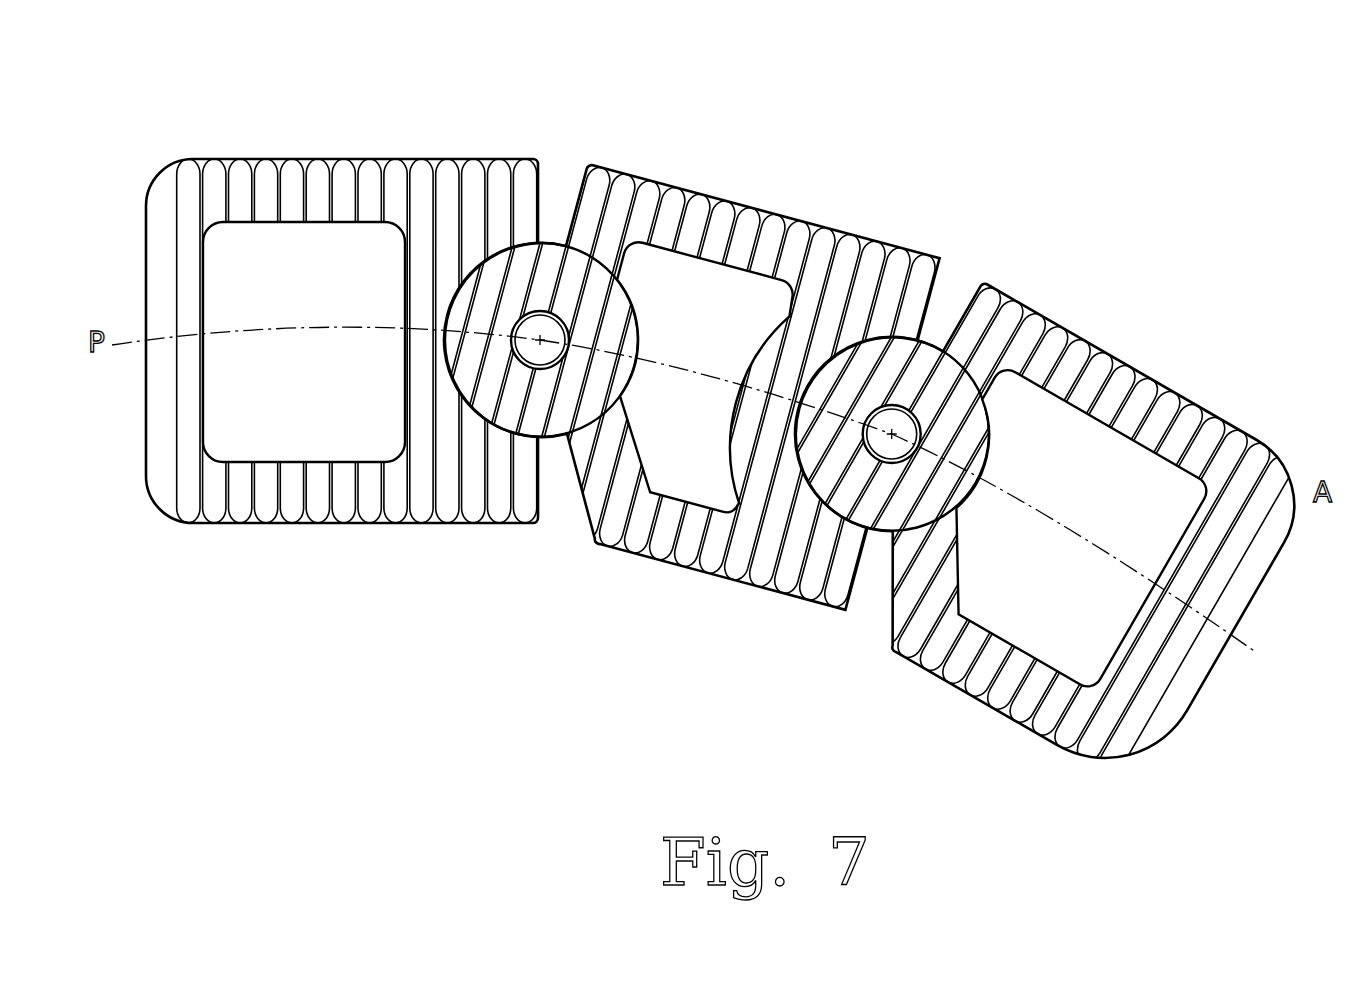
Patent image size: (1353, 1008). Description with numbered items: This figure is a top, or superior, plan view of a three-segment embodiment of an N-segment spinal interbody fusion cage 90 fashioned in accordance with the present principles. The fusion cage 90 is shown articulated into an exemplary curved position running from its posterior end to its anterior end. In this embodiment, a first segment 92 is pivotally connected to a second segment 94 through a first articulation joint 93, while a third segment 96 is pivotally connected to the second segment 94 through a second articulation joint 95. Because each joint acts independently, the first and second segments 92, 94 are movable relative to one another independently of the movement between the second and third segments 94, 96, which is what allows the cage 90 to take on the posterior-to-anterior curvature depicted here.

The N-segment spinal interbody fusion cage 90 is at (734, 414).
The first segment 92 is at (366, 158).
The first articulation joint 93 is at (547, 330).
The second segment 94 is at (764, 212).
The second articulation joint 95 is at (898, 424).
The third segment 96 is at (1141, 372).